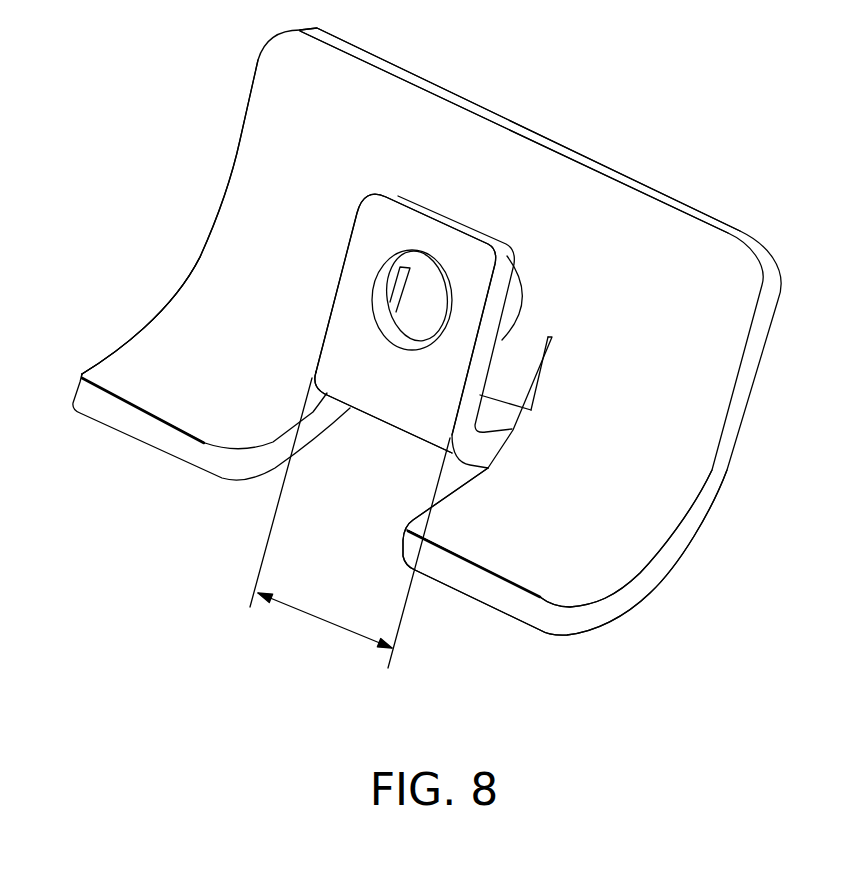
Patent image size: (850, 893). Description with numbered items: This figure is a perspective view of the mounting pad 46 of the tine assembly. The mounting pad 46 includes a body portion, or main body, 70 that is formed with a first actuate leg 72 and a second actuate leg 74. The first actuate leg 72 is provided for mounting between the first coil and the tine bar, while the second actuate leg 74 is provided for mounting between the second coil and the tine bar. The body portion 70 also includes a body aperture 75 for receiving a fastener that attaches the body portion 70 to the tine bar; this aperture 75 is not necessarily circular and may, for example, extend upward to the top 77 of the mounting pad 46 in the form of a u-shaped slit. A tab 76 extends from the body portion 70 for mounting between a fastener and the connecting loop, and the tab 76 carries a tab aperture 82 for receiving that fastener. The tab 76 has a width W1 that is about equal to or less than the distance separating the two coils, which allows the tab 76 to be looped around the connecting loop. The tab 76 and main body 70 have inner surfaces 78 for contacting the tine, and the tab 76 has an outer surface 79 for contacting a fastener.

The mounting pad 46 is at (660, 118).
The body portion 70 is at (753, 392).
The first actuate leg 72 is at (137, 337).
The second actuate leg 74 is at (682, 552).
The body aperture 75 is at (510, 310).
The tab 76 is at (412, 227).
The top 77 is at (528, 132).
The inner surfaces 78 is at (213, 318).
The outer surface 79 is at (345, 340).
The tab aperture 82 is at (429, 311).
The width W1 is at (325, 623).